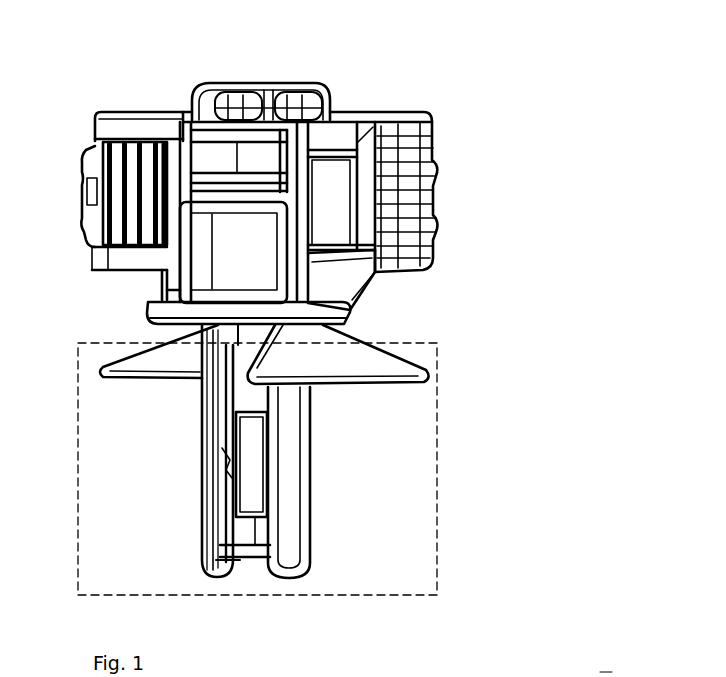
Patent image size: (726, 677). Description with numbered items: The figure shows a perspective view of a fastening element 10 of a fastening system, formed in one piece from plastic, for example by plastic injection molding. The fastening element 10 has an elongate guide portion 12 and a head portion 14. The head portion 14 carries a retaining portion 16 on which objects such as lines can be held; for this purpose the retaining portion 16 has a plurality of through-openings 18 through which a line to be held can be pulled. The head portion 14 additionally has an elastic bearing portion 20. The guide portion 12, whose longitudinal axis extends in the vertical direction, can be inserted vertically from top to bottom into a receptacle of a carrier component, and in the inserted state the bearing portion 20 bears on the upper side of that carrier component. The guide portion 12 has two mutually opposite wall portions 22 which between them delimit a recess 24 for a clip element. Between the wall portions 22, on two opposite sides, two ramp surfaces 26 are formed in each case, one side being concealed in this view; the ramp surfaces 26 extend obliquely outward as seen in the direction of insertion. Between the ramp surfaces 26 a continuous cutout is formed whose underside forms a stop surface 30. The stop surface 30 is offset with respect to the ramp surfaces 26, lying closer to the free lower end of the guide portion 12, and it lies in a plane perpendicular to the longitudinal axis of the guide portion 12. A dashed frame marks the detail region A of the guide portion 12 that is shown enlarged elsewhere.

The fastening element 10 is at (542, 250).
The guide portion 12 is at (146, 461).
The head portion 14 is at (462, 95).
The retaining portion 16 is at (129, 122).
The through-openings 18 is at (347, 114).
The bearing portion 20 is at (390, 356).
The wall portions 22 is at (203, 512).
The recess 24 is at (606, 674).
The ramp surfaces 26 is at (222, 470).
The stop surface 30 is at (250, 562).
The detail region A is at (437, 463).